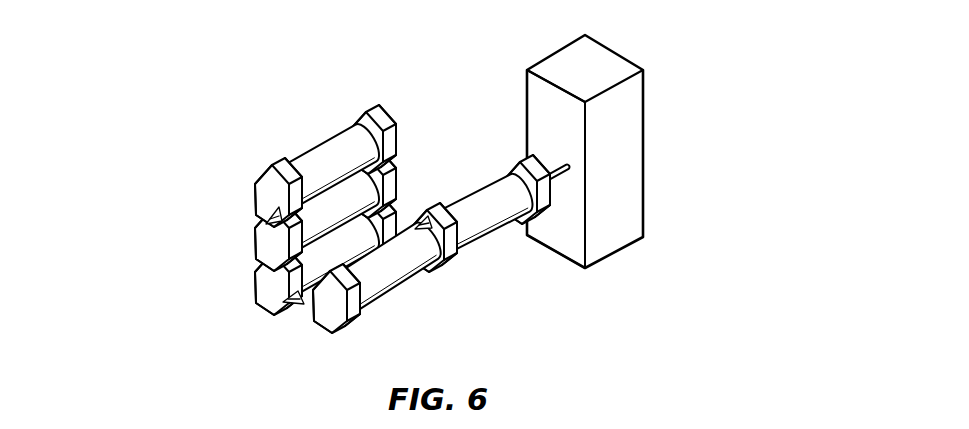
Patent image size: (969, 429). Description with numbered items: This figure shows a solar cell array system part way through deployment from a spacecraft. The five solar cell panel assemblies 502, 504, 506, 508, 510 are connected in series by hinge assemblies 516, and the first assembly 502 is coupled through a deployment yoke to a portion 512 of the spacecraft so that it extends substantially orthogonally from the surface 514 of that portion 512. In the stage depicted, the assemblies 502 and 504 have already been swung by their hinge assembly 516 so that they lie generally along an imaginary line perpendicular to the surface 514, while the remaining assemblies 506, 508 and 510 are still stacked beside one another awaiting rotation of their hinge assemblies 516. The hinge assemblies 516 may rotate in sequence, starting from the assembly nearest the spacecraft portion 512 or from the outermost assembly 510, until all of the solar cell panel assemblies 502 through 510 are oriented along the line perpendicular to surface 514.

The solar cell panel assembly 502 is at (497, 238).
The solar cell panel assembly 504 is at (398, 297).
The solar cell panel assembly 506 is at (268, 303).
The solar cell panel assembly 508 is at (256, 258).
The solar cell panel assembly 510 is at (256, 196).
The portion of a spacecraft 512 is at (580, 82).
The surface 514 is at (558, 132).
The hinge assembly 516 is at (262, 223).